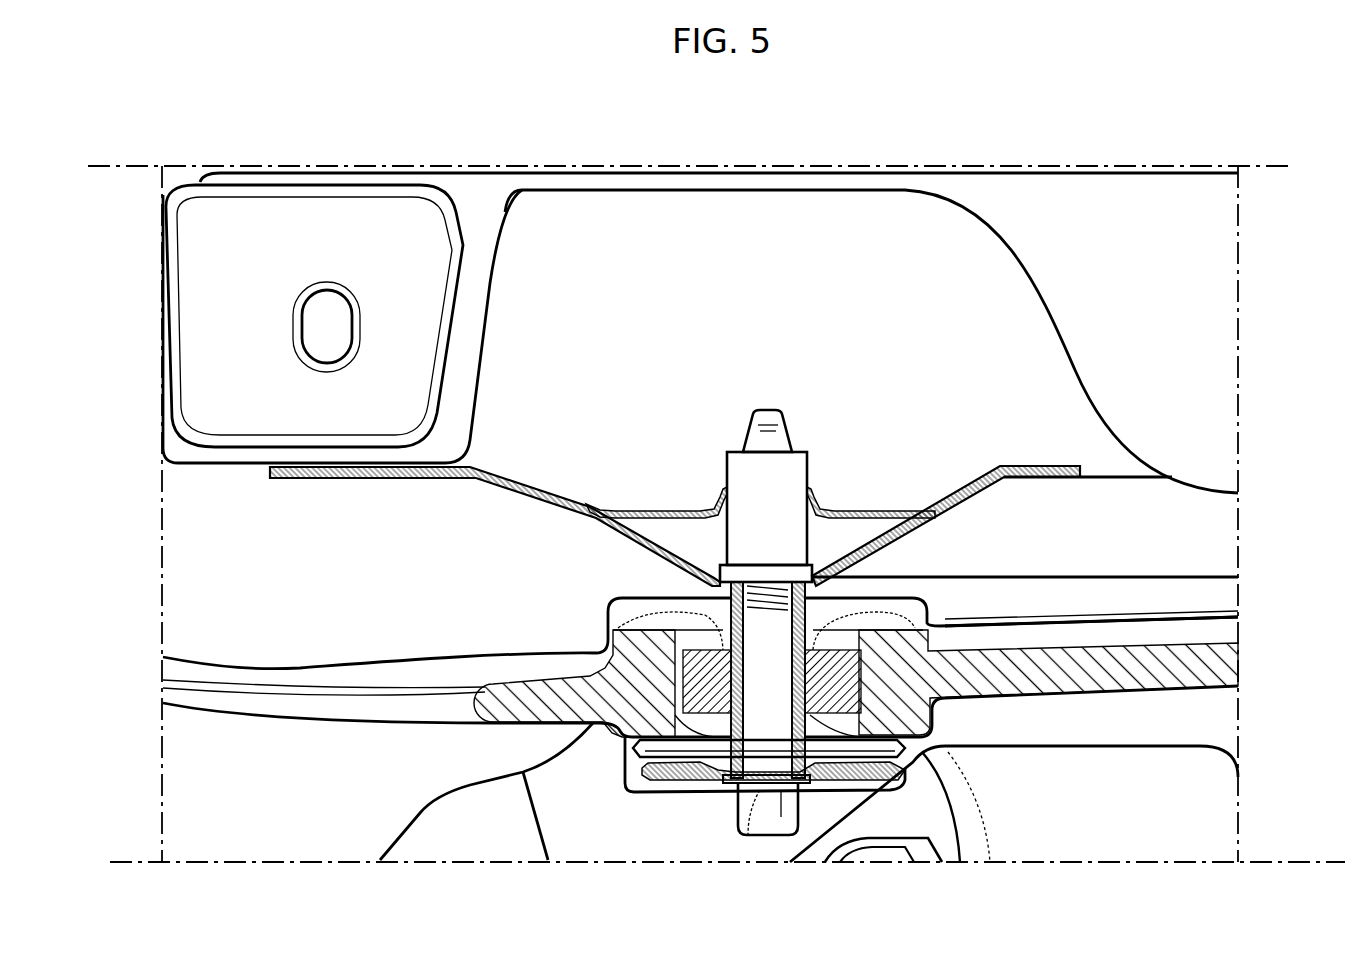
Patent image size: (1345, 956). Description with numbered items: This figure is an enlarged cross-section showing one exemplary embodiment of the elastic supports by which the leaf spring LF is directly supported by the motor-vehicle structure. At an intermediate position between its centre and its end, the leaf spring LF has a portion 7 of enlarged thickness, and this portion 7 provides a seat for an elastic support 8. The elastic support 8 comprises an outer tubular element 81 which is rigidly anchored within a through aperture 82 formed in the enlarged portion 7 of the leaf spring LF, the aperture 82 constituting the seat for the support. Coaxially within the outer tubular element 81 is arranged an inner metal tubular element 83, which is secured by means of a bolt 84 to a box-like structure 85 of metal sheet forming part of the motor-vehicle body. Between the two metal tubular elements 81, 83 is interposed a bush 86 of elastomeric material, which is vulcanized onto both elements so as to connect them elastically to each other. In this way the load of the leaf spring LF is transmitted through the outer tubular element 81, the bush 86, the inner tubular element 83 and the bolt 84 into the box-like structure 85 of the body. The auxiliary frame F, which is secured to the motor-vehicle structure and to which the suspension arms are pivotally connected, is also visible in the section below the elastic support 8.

The portion with enlarged thickness 7 is at (935, 722).
The elastic support 8 is at (672, 790).
The outer tubular element 81 is at (606, 619).
The through aperture 82 is at (848, 640).
The inner metal tubular element 83 is at (755, 800).
The bolt 84 is at (775, 800).
The box-like structure 85 is at (888, 505).
The bush 86 is at (720, 601).
The leaf spring LF is at (1205, 615).
The auxiliary frame F is at (1210, 745).